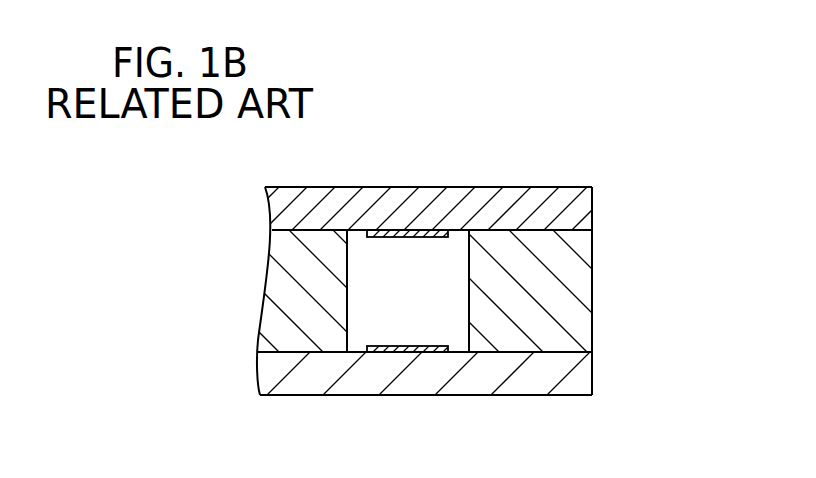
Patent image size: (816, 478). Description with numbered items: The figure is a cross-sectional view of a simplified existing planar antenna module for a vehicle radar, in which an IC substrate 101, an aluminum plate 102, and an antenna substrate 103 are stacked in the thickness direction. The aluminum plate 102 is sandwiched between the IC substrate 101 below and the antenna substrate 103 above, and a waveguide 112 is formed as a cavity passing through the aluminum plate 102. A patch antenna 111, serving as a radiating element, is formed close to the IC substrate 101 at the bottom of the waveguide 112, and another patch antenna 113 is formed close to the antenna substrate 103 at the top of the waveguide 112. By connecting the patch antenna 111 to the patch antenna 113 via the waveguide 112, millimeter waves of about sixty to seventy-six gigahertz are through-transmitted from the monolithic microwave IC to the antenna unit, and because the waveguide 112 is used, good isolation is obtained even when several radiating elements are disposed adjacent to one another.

The IC substrate 101 is at (583, 374).
The aluminum plate 102 is at (583, 290).
The antenna substrate 103 is at (583, 212).
The patch antenna 111 is at (426, 352).
The waveguide 112 is at (469, 283).
The patch antenna 113 is at (385, 230).